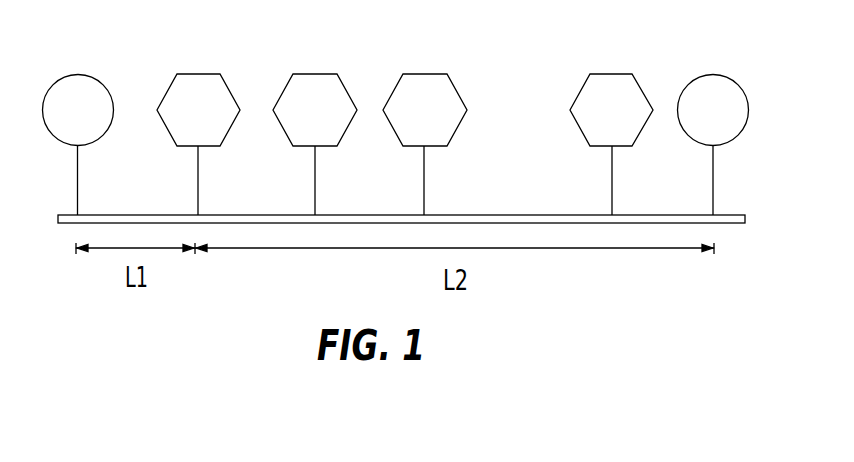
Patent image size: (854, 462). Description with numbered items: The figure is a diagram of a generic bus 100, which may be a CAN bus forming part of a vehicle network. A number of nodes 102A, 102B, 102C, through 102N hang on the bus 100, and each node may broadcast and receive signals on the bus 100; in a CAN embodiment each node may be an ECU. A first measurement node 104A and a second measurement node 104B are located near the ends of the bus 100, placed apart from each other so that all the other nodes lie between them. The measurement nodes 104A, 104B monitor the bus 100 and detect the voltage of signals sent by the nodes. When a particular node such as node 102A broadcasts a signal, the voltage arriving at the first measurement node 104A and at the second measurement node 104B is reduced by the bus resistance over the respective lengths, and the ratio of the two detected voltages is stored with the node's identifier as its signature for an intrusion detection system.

The bus 100 is at (655, 214).
The node 102A is at (200, 74).
The node 102B is at (315, 74).
The node 102C is at (423, 74).
The node 102N is at (612, 74).
The first measurement node 104A is at (91, 75).
The second measurement node 104B is at (727, 77).